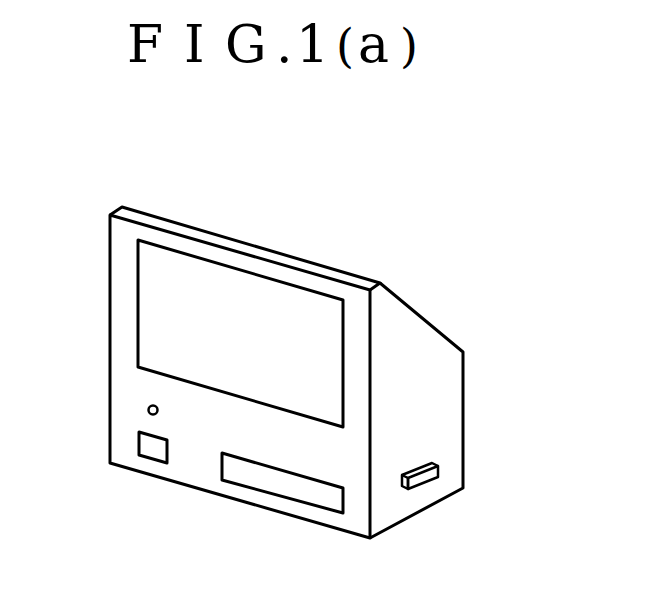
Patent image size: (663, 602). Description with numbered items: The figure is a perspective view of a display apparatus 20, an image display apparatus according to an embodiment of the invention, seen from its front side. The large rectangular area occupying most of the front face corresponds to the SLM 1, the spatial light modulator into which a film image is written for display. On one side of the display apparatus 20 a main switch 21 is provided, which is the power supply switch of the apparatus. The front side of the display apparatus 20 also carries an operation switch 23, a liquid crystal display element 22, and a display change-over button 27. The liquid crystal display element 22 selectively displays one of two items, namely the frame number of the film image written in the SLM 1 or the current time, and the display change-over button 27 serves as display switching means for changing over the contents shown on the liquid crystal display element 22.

The SLM 1 is at (158, 286).
The display apparatus 20 is at (418, 323).
The main switch 21 is at (421, 479).
The liquid crystal display element 22 is at (152, 448).
The operation switch 23 is at (270, 478).
The display change-over button 27 is at (148, 410).